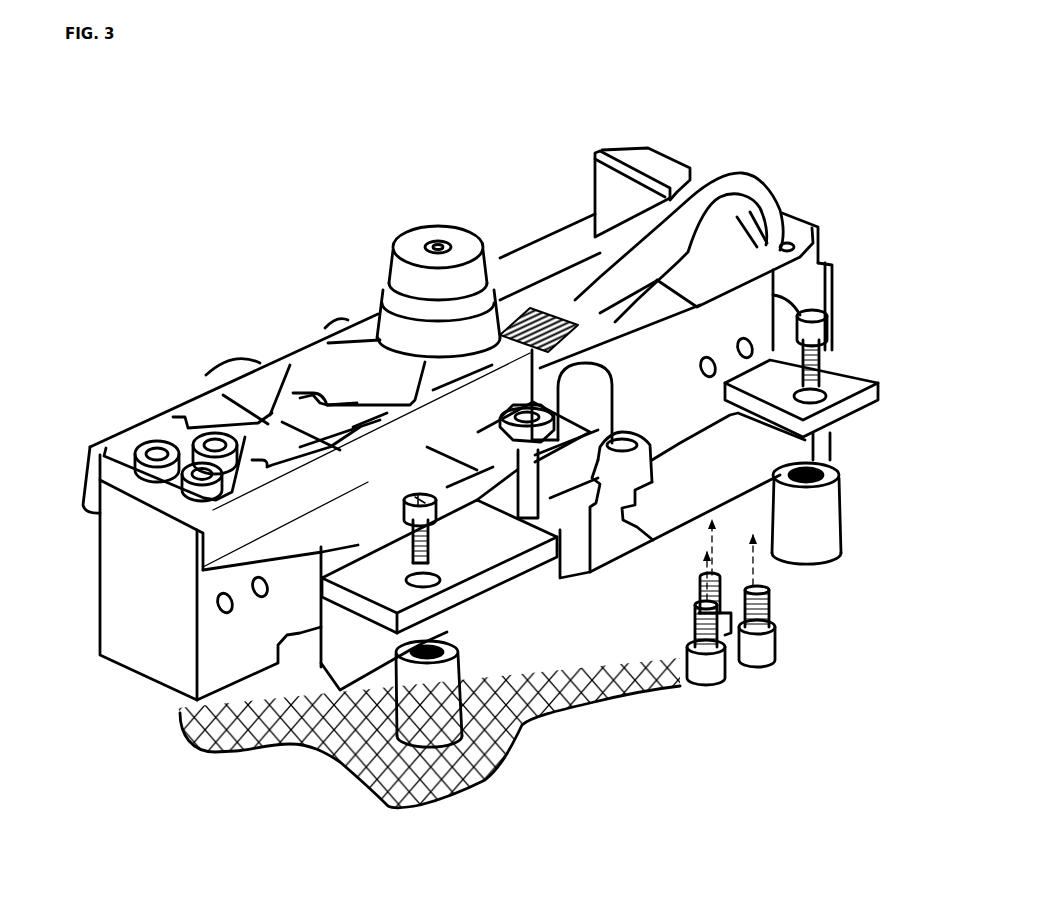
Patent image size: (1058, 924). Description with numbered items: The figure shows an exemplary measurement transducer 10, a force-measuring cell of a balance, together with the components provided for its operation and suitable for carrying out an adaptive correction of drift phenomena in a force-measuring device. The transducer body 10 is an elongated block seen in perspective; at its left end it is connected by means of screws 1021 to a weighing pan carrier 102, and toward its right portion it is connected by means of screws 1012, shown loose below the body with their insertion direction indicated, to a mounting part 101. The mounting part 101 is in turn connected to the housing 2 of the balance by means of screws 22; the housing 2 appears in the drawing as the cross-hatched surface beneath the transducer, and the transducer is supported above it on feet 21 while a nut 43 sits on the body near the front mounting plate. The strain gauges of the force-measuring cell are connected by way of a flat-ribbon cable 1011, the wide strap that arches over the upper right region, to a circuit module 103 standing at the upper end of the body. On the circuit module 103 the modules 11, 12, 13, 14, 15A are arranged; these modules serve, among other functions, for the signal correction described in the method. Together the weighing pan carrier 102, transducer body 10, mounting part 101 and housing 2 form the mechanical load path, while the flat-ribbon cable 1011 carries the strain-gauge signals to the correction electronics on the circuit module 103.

The housing 2 is at (602, 702).
The measurement transducer 10 is at (150, 637).
The module 11 is at (770, 201).
The module 12 is at (735, 267).
The module 13 is at (787, 247).
The module 14 is at (752, 229).
The module 15A is at (800, 238).
The support foot 21 is at (445, 710).
The screws 22 is at (437, 512).
The nut 43 is at (473, 455).
The mounting part 101 is at (467, 590).
The weighing pan carrier 102 is at (272, 335).
The circuit module 103 is at (590, 168).
The flat-ribbon cable 1011 is at (626, 266).
The screws 1012 is at (753, 677).
The screws 1021 is at (177, 438).